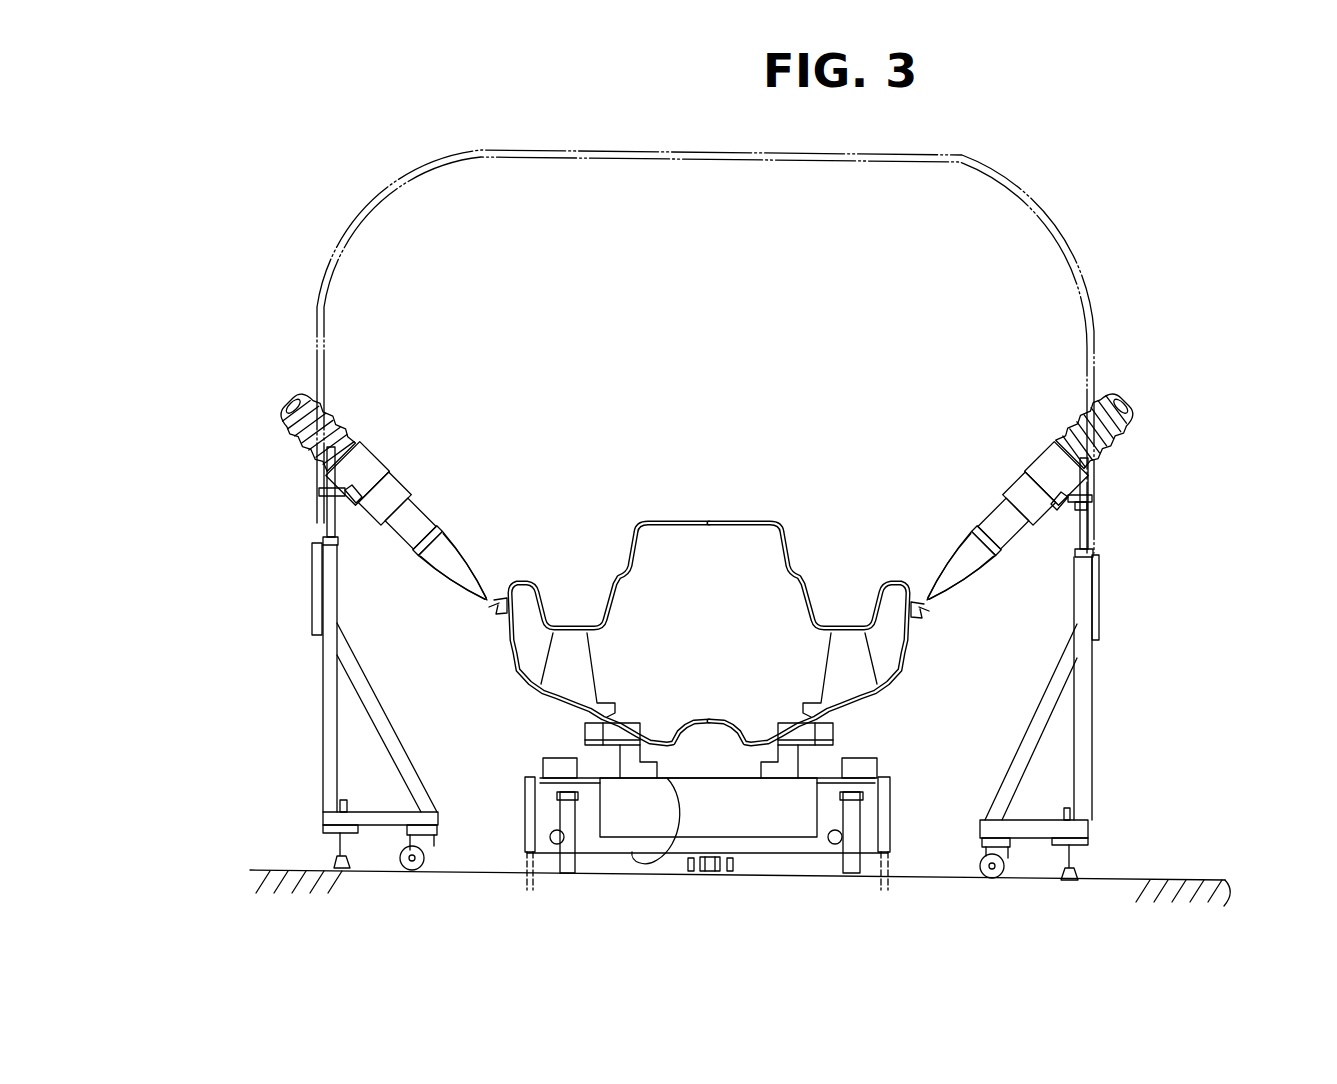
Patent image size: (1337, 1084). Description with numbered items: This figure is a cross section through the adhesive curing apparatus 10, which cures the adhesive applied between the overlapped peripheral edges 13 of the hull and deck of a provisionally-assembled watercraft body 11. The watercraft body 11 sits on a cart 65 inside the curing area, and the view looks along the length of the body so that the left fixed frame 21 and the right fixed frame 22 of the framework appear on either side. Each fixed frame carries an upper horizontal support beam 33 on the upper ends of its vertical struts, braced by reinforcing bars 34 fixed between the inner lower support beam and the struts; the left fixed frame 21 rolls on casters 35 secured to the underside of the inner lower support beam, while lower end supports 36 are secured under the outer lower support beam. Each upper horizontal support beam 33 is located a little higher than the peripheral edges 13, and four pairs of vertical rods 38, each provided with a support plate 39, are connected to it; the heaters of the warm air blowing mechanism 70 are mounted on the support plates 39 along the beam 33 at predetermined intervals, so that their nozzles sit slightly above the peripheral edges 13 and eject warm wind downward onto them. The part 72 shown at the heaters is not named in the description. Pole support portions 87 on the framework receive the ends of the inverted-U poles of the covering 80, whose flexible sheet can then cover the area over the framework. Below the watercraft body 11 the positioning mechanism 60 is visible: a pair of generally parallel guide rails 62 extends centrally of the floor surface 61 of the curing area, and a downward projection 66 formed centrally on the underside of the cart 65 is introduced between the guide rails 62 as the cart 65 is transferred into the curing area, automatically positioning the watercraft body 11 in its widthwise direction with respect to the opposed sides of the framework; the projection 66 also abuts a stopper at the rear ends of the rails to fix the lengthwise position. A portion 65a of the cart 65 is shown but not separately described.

The adhesive curing apparatus 10 is at (324, 156).
The covering 80 is at (561, 144).
The warm air blowing mechanism 70 is at (1169, 409).
The provisionally-assembled watercraft body 11 is at (720, 522).
The peripheral edges 13 is at (496, 607).
The left fixed frame 21 is at (327, 698).
The right fixed frame 22 is at (1093, 762).
The upper horizontal support beam 33 is at (322, 545).
The reinforcing bars 34 is at (410, 757).
The casters 35 is at (404, 873).
The leveling foot 36 is at (330, 848).
The vertical rods 38 is at (320, 462).
The support plate 39 is at (322, 484).
The pole support portions 87 is at (314, 602).
The flexible hose 72 is at (338, 425).
The positioning mechanism 60 is at (750, 878).
The floor surface 61 is at (512, 871).
The guide rails 62 is at (685, 865).
The cart 65 is at (914, 783).
The carriage support 65a is at (668, 745).
The downward projection 66 is at (708, 872).